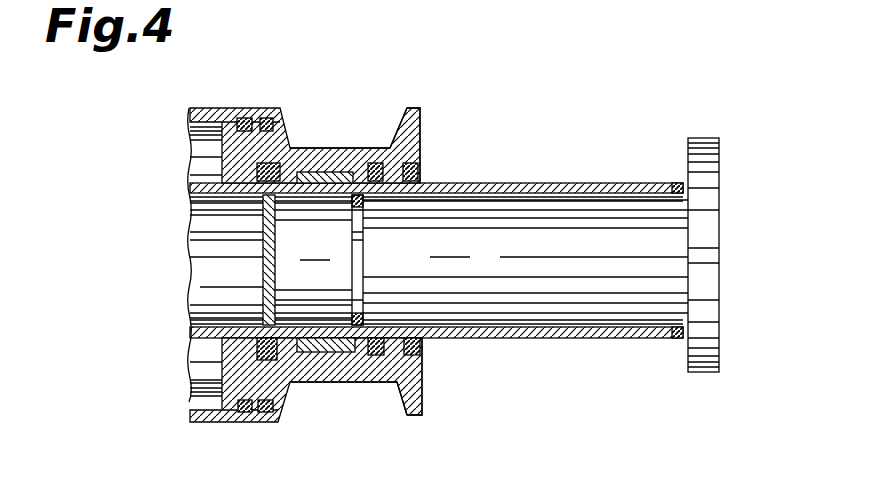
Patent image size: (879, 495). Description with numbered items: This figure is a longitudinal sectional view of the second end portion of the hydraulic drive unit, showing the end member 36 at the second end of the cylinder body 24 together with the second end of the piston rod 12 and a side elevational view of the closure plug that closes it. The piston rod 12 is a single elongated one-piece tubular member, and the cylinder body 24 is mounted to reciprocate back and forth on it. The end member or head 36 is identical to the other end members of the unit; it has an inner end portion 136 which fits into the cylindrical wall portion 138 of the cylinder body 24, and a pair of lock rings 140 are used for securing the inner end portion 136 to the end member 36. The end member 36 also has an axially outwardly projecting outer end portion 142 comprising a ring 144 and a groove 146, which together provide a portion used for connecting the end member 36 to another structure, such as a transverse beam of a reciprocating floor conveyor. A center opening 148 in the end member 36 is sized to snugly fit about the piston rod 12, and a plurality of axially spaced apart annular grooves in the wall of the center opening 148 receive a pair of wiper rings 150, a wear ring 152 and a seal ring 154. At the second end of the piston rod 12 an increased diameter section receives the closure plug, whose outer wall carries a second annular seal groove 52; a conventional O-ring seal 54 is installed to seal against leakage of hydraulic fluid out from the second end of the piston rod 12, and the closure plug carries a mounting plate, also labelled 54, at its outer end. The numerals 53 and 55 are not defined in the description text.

The piston rod 12 is at (512, 338).
The cylinder body 24 is at (203, 108).
The end member 36 is at (342, 147).
The second annular seal groove 52 is at (360, 262).
The seal 53 is at (674, 183).
The O-ring seal 54 is at (719, 165).
The bushing 55 is at (363, 199).
The inner end portion 136 is at (222, 152).
The cylindrical wall portion 138 is at (252, 106).
The lock rings 140 is at (290, 112).
The outer end portion 142 is at (421, 128).
The ring 144 is at (414, 108).
The groove 146 is at (385, 135).
The center opening 148 is at (252, 192).
The wiper rings 150 is at (418, 172).
The wear ring 152 is at (262, 260).
The seal ring 154 is at (265, 200).